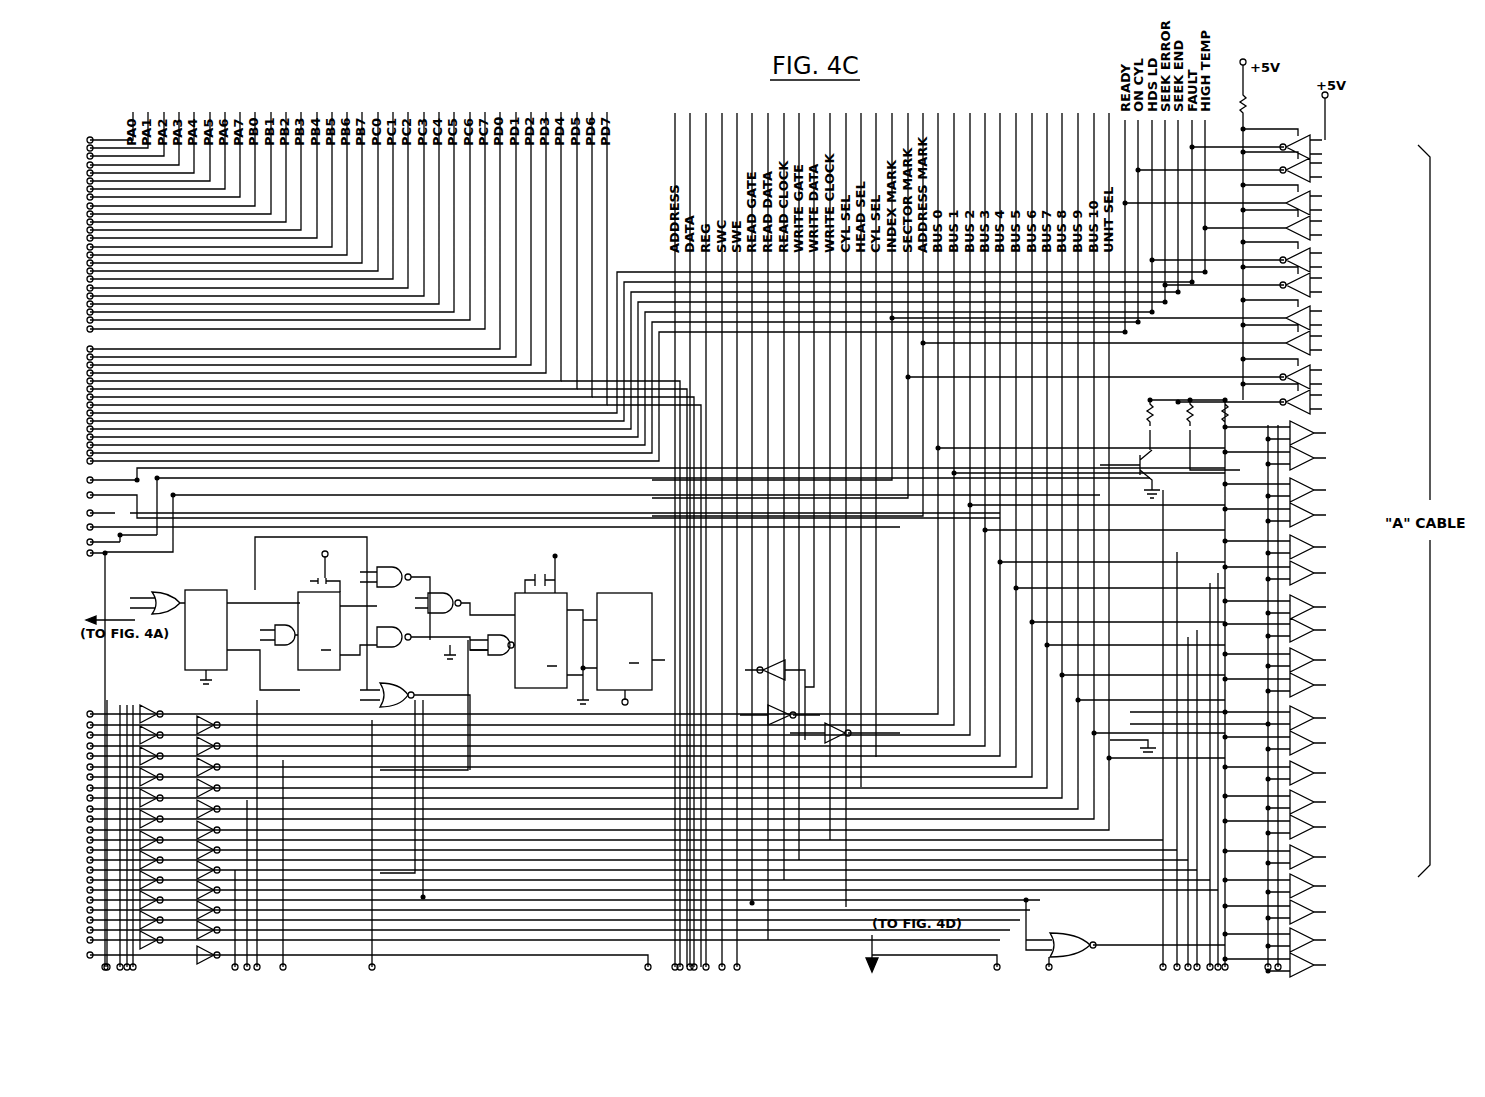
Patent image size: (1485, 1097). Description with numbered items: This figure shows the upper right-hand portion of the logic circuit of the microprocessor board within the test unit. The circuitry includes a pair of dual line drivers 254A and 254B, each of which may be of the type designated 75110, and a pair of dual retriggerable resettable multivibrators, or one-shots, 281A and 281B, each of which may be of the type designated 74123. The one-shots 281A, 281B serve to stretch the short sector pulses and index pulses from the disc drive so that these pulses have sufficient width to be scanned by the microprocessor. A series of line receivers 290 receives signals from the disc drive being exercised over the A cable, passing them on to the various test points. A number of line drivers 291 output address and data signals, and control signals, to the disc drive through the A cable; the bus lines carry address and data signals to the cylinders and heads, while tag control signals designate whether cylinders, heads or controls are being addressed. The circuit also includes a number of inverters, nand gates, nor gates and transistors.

The dual line driver 254A is at (215, 622).
The dual retriggerable resettable multivibrator 281A is at (318, 630).
The dual retriggerable resettable multivibrator 281B is at (499, 621).
The dual line driver 254B is at (621, 626).
The line receivers 290 is at (1162, 233).
The line drivers 291 is at (1173, 699).